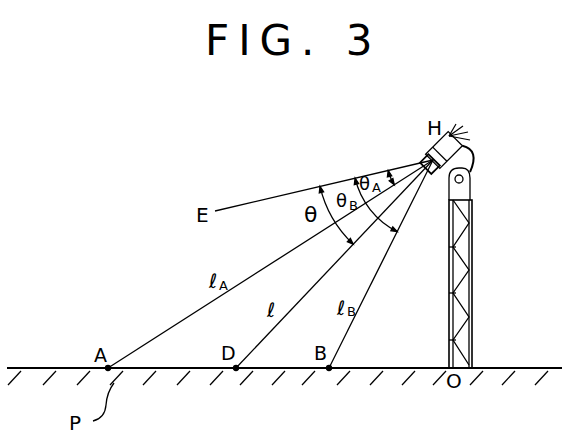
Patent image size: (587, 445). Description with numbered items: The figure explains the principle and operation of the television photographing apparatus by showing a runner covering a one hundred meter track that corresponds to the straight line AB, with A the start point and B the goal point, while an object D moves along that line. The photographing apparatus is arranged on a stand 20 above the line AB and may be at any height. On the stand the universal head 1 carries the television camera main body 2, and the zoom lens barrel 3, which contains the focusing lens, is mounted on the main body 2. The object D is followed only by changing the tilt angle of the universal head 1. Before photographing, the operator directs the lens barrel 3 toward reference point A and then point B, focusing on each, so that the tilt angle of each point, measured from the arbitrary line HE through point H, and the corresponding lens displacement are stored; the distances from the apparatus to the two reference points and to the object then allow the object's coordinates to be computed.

The universal head 1 is at (471, 183).
The television camera main body 2 is at (464, 146).
The zoom lens barrel 3 is at (424, 157).
The stand 20 is at (474, 288).